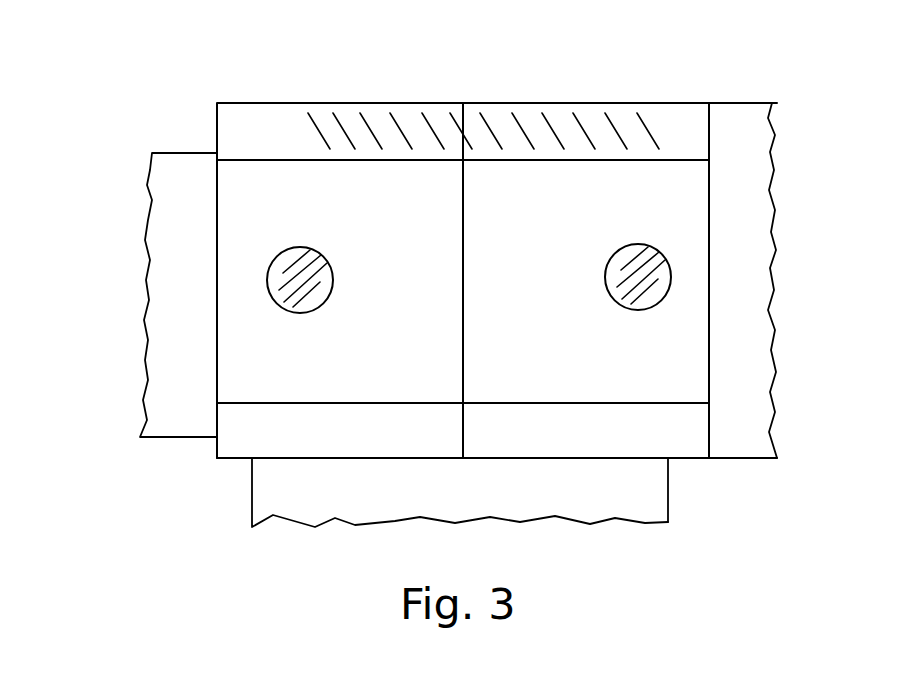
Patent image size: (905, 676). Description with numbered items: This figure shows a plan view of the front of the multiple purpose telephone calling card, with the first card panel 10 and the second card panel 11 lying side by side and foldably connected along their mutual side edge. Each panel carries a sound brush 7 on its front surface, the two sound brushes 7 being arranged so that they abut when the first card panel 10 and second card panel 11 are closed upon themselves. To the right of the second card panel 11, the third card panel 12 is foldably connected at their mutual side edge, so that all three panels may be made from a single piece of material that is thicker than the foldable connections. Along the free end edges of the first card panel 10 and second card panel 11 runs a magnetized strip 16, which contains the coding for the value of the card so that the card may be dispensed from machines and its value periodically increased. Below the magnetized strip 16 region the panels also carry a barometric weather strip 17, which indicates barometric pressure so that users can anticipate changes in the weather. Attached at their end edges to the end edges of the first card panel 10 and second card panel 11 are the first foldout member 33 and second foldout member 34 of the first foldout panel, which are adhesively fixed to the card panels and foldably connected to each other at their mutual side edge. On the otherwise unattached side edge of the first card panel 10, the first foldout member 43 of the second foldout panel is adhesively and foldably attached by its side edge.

The sound brush 7 is at (273, 305).
The first card panel 10 is at (414, 293).
The second card panel 11 is at (539, 293).
The third card panel 12 is at (748, 363).
The magnetized strip 16 is at (567, 107).
The barometric weather strip 17 is at (260, 445).
The first foldout member 33 is at (367, 507).
The second foldout member 34 is at (650, 488).
The first foldout member 43 is at (157, 285).